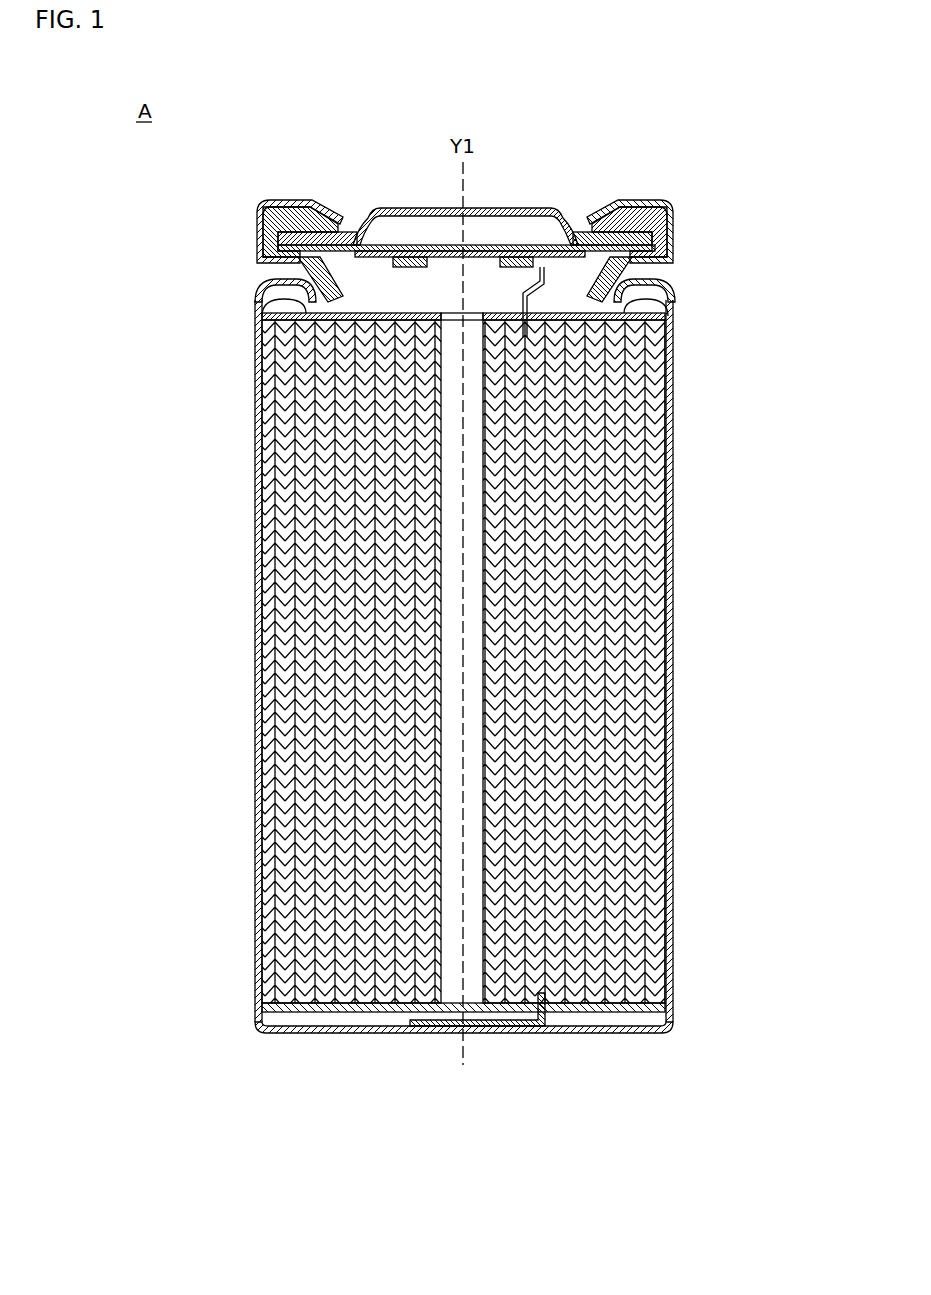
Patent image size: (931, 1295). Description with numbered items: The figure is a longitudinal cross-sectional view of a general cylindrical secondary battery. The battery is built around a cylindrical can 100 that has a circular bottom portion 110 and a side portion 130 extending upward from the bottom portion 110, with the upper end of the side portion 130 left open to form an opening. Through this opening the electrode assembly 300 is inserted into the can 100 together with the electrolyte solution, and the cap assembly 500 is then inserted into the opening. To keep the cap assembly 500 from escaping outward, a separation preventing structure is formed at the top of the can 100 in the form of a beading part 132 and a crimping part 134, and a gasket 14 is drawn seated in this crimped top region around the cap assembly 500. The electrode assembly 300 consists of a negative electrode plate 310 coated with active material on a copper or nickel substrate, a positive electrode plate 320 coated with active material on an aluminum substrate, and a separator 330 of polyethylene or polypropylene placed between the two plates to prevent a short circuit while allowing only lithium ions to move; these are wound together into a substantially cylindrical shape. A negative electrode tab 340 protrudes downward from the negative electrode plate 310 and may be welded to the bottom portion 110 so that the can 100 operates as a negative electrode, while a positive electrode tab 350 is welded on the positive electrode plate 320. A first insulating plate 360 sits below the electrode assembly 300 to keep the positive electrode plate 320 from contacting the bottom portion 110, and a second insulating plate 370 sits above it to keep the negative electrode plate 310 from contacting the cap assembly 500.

The gasket 14 is at (298, 205).
The crimping part 134 is at (257, 234).
The beading part 132 is at (307, 272).
The second insulating plate 370 is at (258, 298).
The positive electrode tab 350 is at (600, 276).
The cap assembly 500 is at (513, 202).
The electrode assembly 300 is at (541, 658).
The negative electrode plate 310 is at (667, 406).
The positive electrode plate 320 is at (652, 448).
The separator 330 is at (643, 485).
The can 100 is at (545, 679).
The side portion 130 is at (672, 903).
The bottom portion 110 is at (640, 1058).
The first insulating plate 360 is at (378, 1012).
The negative electrode tab 340 is at (506, 1026).